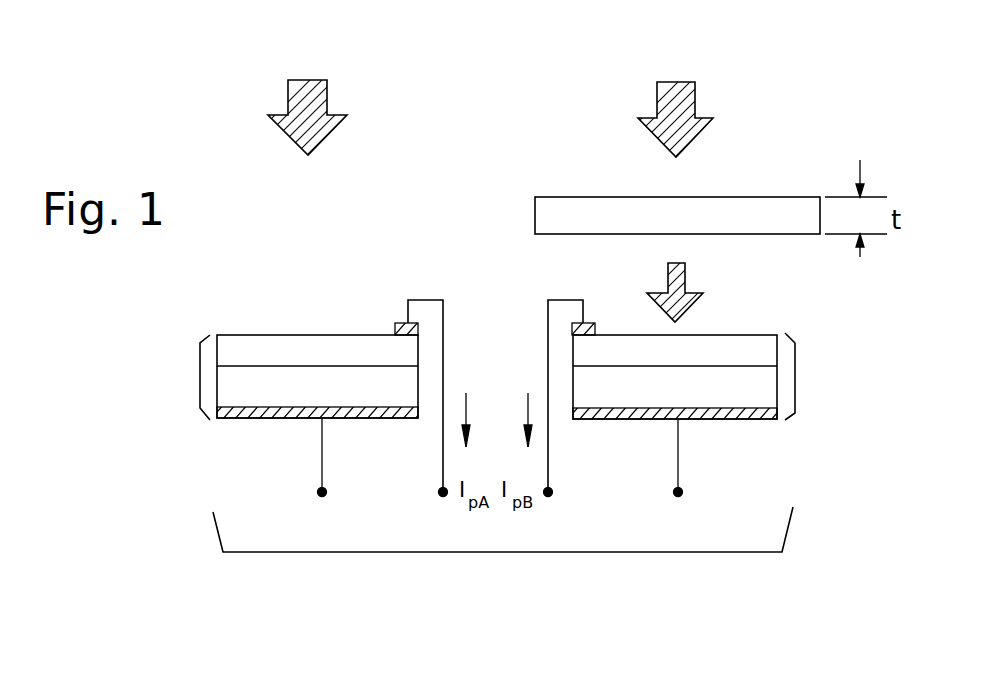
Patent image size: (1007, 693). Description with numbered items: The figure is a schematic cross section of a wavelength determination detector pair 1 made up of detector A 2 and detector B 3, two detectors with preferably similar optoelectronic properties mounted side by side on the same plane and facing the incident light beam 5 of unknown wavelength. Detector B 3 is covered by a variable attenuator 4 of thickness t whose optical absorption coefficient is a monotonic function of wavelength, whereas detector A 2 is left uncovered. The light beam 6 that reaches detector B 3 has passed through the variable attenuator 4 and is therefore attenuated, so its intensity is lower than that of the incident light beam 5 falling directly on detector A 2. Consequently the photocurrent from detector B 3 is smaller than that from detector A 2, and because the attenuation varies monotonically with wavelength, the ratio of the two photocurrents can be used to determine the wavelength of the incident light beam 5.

The detector pair 1 is at (575, 567).
The detector A 2 is at (197, 380).
The detector B 3 is at (797, 378).
The variable attenuator 4 is at (798, 190).
The incident light beam 5 is at (343, 93).
The attenuated light beam 6 is at (710, 285).